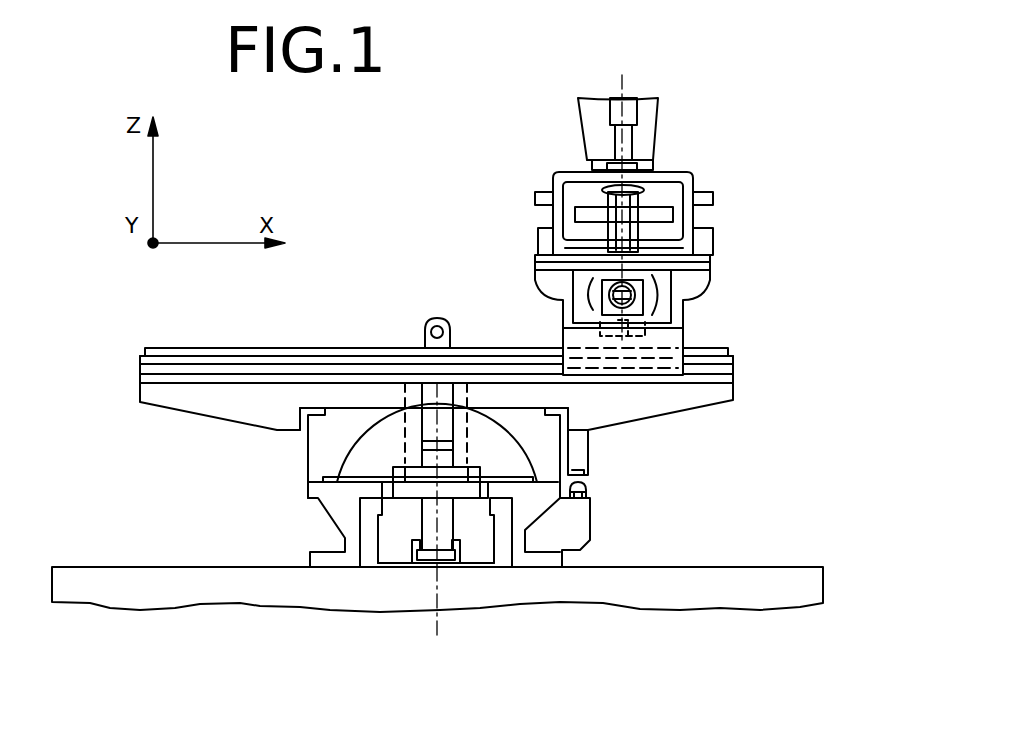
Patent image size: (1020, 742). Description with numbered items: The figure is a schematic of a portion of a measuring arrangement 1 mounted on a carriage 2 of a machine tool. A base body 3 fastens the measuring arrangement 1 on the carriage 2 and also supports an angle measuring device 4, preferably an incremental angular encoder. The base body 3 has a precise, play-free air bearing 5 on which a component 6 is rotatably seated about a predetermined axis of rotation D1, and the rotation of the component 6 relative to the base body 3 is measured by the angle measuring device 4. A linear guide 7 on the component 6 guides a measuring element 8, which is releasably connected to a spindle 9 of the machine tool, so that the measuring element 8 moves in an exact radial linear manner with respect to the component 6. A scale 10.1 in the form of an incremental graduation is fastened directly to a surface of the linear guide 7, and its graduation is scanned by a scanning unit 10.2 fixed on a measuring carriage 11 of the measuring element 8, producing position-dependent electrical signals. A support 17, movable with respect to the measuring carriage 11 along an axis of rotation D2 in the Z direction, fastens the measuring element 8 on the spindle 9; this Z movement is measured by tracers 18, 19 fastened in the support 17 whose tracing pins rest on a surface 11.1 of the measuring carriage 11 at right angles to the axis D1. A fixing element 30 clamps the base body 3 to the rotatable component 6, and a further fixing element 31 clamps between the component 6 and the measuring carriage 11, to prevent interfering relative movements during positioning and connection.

The measuring arrangement 1 is at (401, 282).
The carriage 2 is at (683, 590).
The base body 3 is at (323, 453).
The angle measuring device 4 is at (393, 550).
The air bearing 5 is at (363, 462).
The component 6 is at (183, 400).
The linear guide 7 is at (150, 372).
The measuring element 8 is at (504, 247).
The spindle 9 is at (648, 124).
The scale 10.1 is at (176, 352).
The scanning unit 10.2 is at (663, 330).
The measuring carriage 11 is at (675, 300).
The surface 11.1 is at (693, 263).
The support 17 is at (682, 178).
The tracer 18 is at (548, 193).
The tracer 19 is at (702, 217).
The fixing element 30 is at (590, 488).
The fixing element 31 is at (428, 330).
The axis of rotation D1 is at (438, 620).
The axis of rotation D2 is at (620, 92).